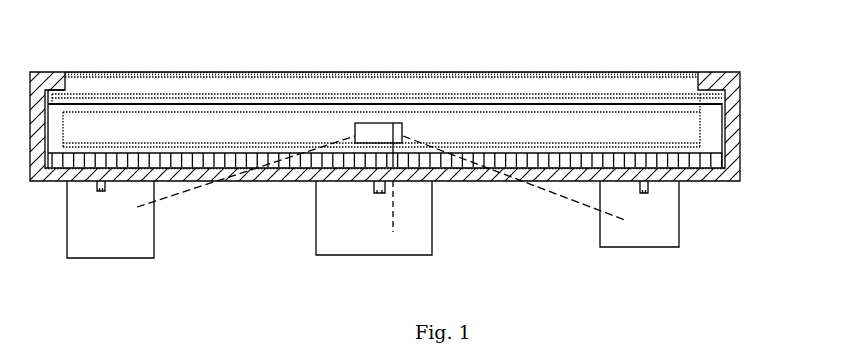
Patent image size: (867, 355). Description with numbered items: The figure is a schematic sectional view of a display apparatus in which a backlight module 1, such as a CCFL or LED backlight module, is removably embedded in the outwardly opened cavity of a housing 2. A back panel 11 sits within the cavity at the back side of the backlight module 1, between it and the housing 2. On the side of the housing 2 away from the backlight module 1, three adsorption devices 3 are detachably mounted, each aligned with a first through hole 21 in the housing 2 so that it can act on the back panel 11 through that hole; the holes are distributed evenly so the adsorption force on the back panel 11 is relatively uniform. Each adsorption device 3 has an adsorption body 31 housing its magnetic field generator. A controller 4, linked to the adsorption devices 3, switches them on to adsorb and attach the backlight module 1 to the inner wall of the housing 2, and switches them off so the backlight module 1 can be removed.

The backlight module 1 is at (532, 73).
The housing 2 is at (740, 121).
The adsorption device 3 is at (155, 229).
The controller 4 is at (367, 123).
The back panel 11 is at (342, 178).
The first through hole 21 is at (114, 183).
The adsorption body 31 is at (648, 191).